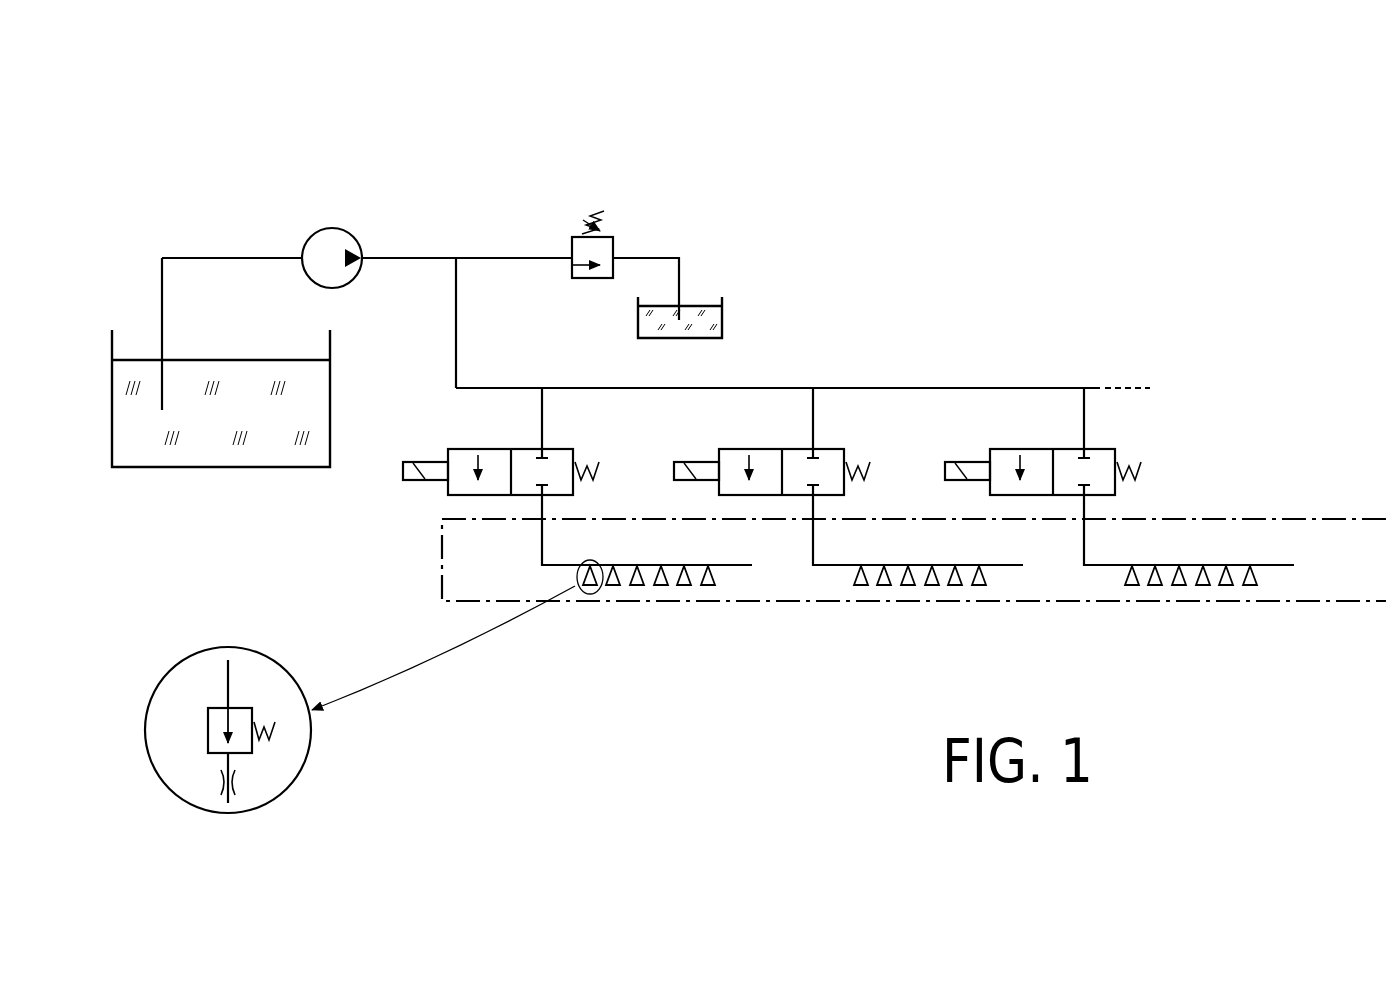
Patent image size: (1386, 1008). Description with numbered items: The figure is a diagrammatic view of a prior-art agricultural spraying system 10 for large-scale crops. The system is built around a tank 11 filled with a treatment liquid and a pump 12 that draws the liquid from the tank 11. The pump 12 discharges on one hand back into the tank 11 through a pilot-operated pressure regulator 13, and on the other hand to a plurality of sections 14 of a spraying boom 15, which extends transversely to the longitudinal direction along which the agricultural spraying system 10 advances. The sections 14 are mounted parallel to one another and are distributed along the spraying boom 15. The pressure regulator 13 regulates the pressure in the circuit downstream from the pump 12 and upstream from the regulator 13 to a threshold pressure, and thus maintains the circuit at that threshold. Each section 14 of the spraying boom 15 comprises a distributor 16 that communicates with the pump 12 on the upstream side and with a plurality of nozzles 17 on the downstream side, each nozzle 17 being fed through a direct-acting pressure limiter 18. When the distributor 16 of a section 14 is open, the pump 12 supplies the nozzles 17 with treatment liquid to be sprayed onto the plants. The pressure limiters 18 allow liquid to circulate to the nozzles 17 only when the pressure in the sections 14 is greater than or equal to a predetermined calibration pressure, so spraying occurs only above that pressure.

The agricultural spraying system 10 is at (238, 151).
The tank 11 is at (331, 397).
The pump 12 is at (332, 228).
The pilot-operated pressure regulator 13 is at (572, 237).
The section 14 is at (542, 427).
The spraying boom 15 is at (440, 553).
The distributor 16 is at (491, 449).
The nozzle 17 is at (237, 782).
The direct-acting pressure limiter 18 is at (238, 708).